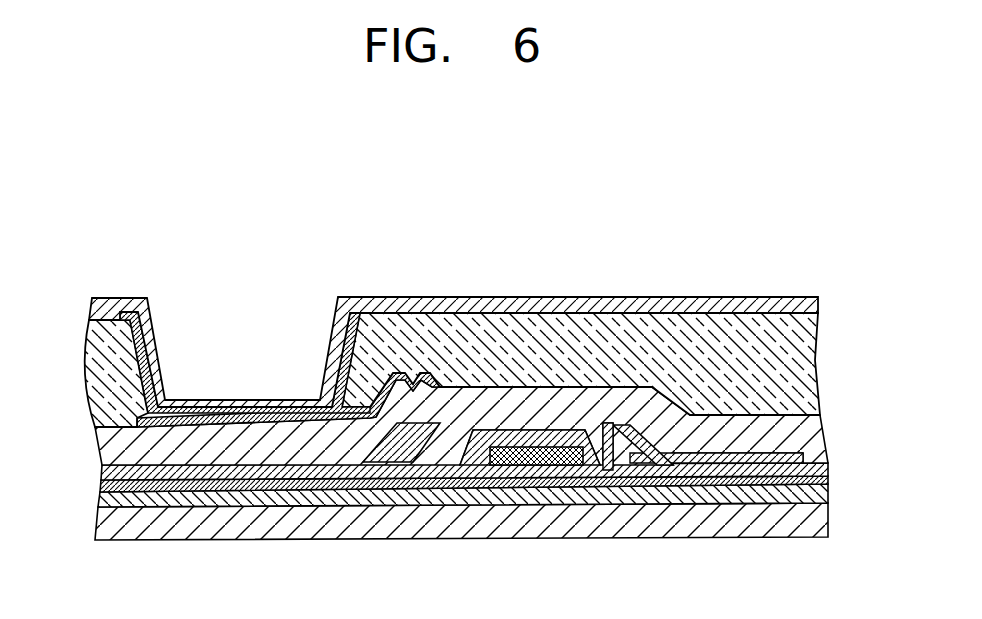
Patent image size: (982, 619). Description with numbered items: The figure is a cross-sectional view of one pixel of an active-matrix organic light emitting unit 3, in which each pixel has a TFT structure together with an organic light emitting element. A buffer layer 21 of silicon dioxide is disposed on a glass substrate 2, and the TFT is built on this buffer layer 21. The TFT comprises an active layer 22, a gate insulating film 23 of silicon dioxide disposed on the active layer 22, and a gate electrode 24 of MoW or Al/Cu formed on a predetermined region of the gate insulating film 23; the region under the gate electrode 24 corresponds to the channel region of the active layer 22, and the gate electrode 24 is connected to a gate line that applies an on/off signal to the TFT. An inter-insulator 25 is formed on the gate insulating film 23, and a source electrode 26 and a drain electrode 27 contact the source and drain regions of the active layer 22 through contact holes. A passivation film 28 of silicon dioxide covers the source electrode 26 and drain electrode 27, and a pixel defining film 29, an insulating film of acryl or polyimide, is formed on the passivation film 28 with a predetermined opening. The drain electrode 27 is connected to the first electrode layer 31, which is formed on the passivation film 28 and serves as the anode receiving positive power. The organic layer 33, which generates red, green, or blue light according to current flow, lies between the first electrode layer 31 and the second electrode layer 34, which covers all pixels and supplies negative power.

The glass substrate 2 is at (813, 520).
The buffer layer 21 is at (820, 494).
The gate insulating film 23 is at (823, 480).
The active layer 22 is at (461, 470).
The gate electrode 24 is at (538, 466).
The inter-insulator 25 is at (823, 463).
The source electrode 26 is at (647, 427).
The drain electrode 27 is at (471, 478).
The passivation film 28 is at (812, 430).
The pixel defining film 29 is at (802, 362).
The first electrode layer 31 is at (251, 428).
The organic layer 33 is at (163, 335).
The second electrode layer 34 is at (395, 305).
The organic light emitting unit 3 is at (78, 283).
The thin film transistor TFT is at (670, 363).